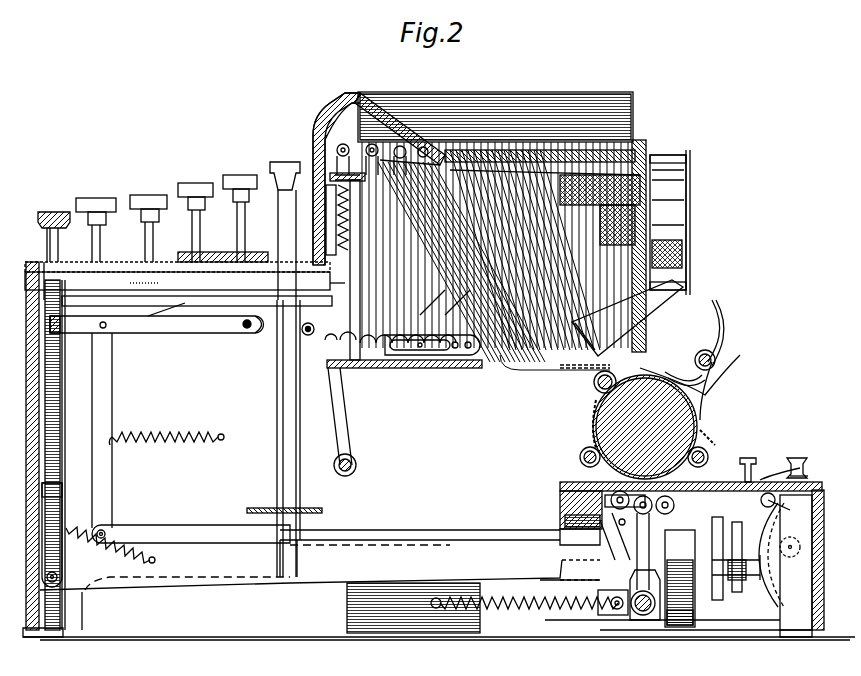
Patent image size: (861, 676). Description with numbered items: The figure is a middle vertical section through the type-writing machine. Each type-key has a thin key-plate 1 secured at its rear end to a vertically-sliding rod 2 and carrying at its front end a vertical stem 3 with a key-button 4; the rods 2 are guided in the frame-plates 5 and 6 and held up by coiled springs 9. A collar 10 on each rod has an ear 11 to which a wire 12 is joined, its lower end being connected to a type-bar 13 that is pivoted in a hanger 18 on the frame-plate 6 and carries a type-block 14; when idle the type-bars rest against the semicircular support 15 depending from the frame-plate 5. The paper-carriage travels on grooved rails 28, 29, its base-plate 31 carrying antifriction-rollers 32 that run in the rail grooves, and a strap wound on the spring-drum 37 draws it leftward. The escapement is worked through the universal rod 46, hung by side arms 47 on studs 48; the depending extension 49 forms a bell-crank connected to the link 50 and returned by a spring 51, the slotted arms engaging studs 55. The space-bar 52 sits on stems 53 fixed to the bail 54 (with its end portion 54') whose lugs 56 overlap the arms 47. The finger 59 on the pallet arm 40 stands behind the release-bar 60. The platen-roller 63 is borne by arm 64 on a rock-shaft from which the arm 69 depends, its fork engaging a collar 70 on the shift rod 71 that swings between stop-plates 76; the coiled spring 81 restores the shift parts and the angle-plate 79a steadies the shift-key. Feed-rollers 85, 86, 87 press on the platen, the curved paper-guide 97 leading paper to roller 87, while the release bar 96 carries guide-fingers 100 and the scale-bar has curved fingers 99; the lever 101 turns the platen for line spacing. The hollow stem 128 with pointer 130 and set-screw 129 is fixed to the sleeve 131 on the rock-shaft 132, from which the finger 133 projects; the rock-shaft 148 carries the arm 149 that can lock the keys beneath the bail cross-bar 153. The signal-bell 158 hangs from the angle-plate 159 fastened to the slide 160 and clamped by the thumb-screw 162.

The key-plate 1 is at (177, 276).
The vertically-sliding rod 2 is at (350, 279).
The vertical stem 3 is at (145, 242).
The key-button 4 is at (130, 195).
The frame-plate 5 is at (332, 118).
The frame-plate 6 is at (392, 368).
The coiled spring 9 is at (278, 234).
The collar 10 is at (366, 160).
The ear 11 is at (415, 130).
The wire 12 is at (355, 230).
The type-bar 13 is at (447, 308).
The type-block 14 is at (500, 135).
The semicircular support 15 is at (650, 160).
The hanger 18 is at (465, 356).
The grooved rail 28 is at (560, 500).
The grooved rail 29 is at (690, 510).
The base-plate 31 is at (590, 480).
The antifriction-roller 32 is at (565, 488).
The spring-drum 37 is at (675, 625).
The arm 40 is at (612, 532).
The universal rod 46 is at (328, 344).
The side arm 47 is at (262, 330).
The stud 48 is at (107, 325).
The depending extension 49 is at (112, 414).
The link 50 is at (182, 533).
The spring 51 is at (174, 442).
The space-bar 52 is at (55, 206).
The stem 53 is at (52, 247).
The bail 54 is at (157, 327).
The lever end 54' is at (57, 324).
The stud 55 is at (245, 328).
The lug 56 is at (150, 306).
The finger 59 is at (622, 530).
The release-bar 60 is at (642, 543).
The platen-roller 63 is at (645, 427).
The arm 64 is at (616, 487).
The arm 69 is at (630, 598).
The collar 70 is at (640, 612).
The rod 71 is at (643, 612).
The stop-plate 76 is at (605, 610).
The angle-plate 79a is at (56, 492).
The coiled spring 81 is at (530, 608).
The feed-roller 85 is at (708, 453).
The feed-roller 86 is at (587, 448).
The feed-roller 87 is at (594, 383).
The paper-release bar 96 is at (696, 356).
The paper-guide 97 is at (595, 405).
The curved finger 99 is at (677, 372).
The guide-finger 100 is at (712, 388).
The lever 101 is at (720, 312).
The hollow stem 128 is at (770, 478).
The set-screw 129 is at (750, 458).
The pointer 130 is at (780, 480).
The sleeve 131 is at (791, 504).
The rock-shaft 132 is at (747, 557).
The finger 133 is at (740, 510).
The rock-shaft 148 is at (357, 466).
The arm 149 is at (345, 418).
The cross-bar 153 is at (290, 300).
The signal-bell 158 is at (798, 566).
The angle-plate 159 is at (779, 555).
The slide 160 is at (822, 552).
The thumb-screw 162 is at (800, 476).